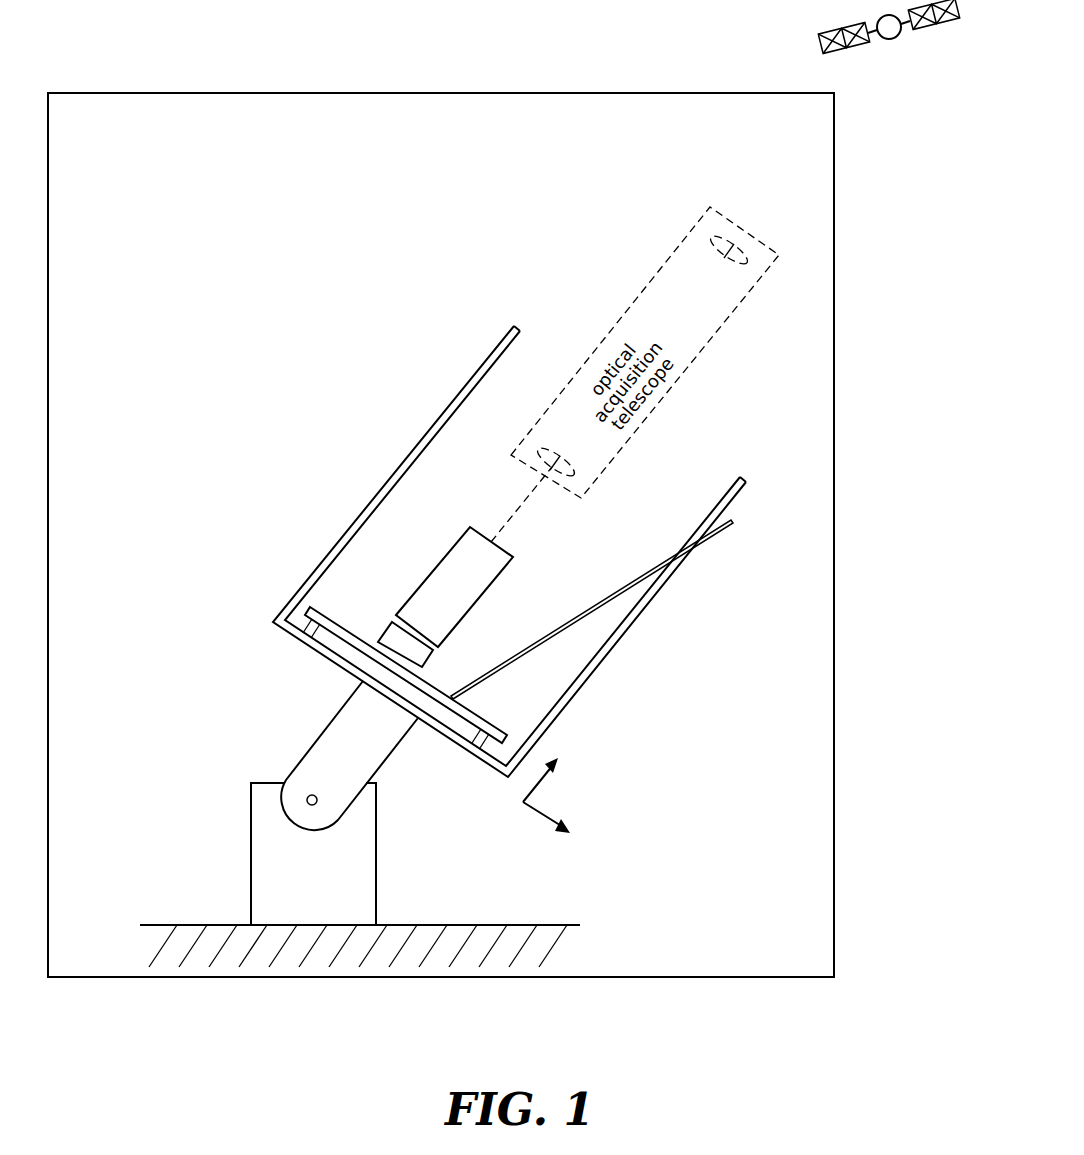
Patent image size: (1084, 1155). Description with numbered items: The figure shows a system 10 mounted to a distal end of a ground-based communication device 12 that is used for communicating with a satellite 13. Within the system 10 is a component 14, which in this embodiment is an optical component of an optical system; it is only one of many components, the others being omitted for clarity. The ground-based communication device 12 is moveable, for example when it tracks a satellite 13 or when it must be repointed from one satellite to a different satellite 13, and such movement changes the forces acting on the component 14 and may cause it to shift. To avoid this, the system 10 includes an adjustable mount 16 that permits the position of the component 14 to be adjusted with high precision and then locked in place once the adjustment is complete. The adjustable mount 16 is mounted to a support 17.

The system 10 is at (119, 40).
The ground-based communication device 12 is at (325, 557).
The satellite 13 is at (892, 39).
The component 14 is at (423, 583).
The adjustable mount 16 is at (380, 628).
The support 17 is at (548, 645).